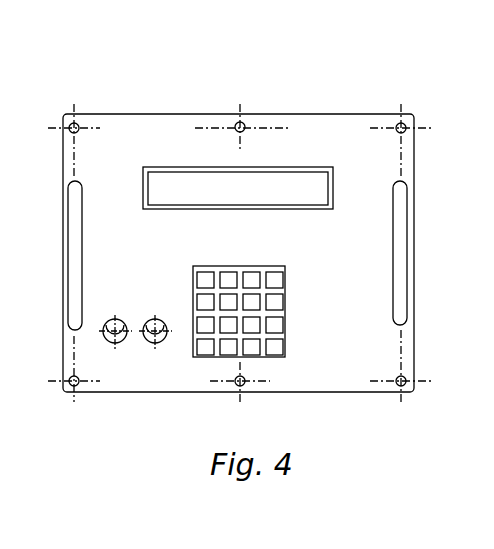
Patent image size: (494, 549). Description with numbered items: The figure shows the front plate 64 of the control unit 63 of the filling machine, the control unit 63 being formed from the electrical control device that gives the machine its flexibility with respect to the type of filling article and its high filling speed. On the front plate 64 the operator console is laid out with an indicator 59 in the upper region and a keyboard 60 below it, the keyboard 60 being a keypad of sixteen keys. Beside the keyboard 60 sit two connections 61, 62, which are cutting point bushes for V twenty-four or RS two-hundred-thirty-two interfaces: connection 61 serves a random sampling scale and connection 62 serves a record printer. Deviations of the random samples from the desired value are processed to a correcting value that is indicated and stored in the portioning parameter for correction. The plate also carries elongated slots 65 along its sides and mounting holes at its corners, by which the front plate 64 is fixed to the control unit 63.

The indicator 59 is at (165, 183).
The keyboard 60 is at (269, 358).
The connection for a random sampling scale 61 is at (104, 332).
The connection for a record printer 62 is at (148, 342).
The control unit 63 is at (347, 111).
The front plate 64 is at (92, 138).
The slot 65 is at (71, 220).